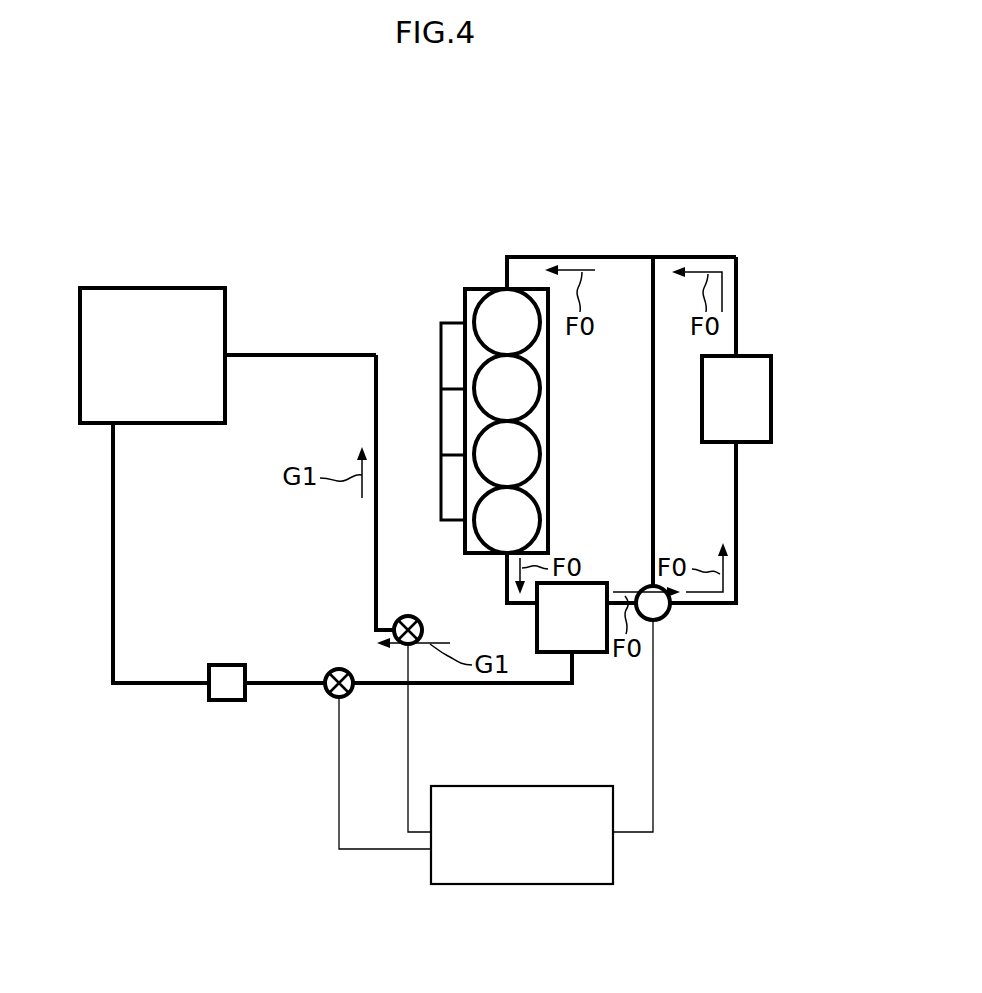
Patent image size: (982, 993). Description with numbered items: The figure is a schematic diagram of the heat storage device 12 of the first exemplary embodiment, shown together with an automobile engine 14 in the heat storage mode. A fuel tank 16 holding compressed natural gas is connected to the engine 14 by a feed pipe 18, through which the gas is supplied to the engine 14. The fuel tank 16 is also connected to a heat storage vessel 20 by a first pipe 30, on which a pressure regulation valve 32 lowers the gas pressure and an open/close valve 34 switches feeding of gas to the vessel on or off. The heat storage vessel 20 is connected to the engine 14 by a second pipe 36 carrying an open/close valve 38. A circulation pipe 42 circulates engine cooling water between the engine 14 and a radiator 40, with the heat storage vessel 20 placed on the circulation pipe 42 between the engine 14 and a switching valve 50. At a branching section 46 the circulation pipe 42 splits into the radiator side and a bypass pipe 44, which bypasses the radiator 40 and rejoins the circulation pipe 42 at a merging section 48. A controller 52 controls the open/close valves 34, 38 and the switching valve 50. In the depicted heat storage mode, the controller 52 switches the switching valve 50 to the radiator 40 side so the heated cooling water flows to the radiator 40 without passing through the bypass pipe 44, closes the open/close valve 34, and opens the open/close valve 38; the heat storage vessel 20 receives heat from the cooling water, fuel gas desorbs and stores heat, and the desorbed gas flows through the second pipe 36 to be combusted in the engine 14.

The heat storage device 12 is at (614, 197).
The engine 14 is at (470, 284).
The fuel tank 16 is at (152, 284).
The feed pipe 18 is at (304, 355).
The heat storage vessel 20 is at (586, 580).
The first pipe 30 is at (113, 634).
The pressure regulation valve 32 is at (228, 665).
The open/close valve 34 is at (340, 669).
The second pipe 36 is at (376, 518).
The open/close valve 38 is at (409, 616).
The radiator 40 is at (771, 402).
The circulation pipe 42 is at (736, 298).
The bypass pipe 44 is at (653, 455).
The branching section 46 is at (650, 589).
The merging section 48 is at (653, 257).
The switching valve 50 is at (666, 614).
The controller 52 is at (521, 884).